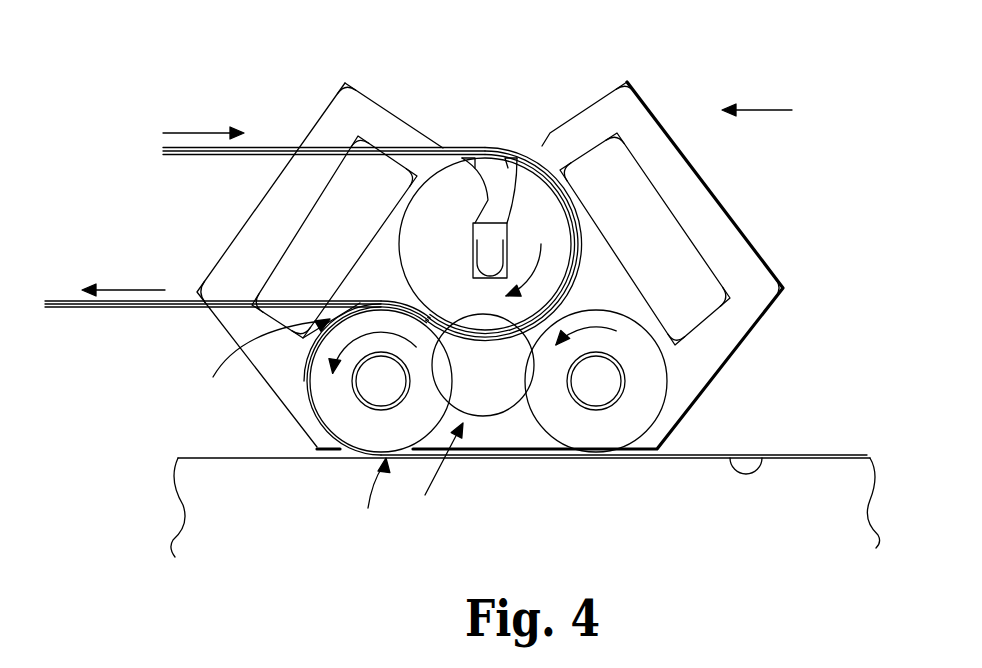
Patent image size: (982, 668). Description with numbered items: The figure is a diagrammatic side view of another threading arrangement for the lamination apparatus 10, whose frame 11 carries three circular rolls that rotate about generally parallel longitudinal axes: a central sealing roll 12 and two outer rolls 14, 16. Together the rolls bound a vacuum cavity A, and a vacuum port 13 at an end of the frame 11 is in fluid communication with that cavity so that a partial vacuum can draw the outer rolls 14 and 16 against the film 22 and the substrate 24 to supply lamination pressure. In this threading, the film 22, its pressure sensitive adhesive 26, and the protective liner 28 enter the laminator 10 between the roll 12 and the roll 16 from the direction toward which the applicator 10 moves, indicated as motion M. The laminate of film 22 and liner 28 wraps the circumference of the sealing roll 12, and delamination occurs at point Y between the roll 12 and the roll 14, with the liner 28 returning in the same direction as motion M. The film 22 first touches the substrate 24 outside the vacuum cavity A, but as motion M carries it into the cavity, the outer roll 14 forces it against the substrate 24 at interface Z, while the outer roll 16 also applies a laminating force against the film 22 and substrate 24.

The lamination apparatus 10 is at (512, 92).
The frame 11 is at (617, 117).
The sealing roll 12 is at (535, 212).
The vacuum port 13 is at (490, 402).
The outer roll 14 is at (337, 397).
The outer roll 16 is at (635, 343).
The film 22 is at (400, 148).
The substrate 24 is at (827, 480).
The adhesive 26 is at (268, 148).
The liner 28 is at (195, 156).
The motion M is at (767, 109).
The point of delamination Y is at (260, 362).
The interface Z is at (375, 499).
The vacuum cavity A is at (434, 469).